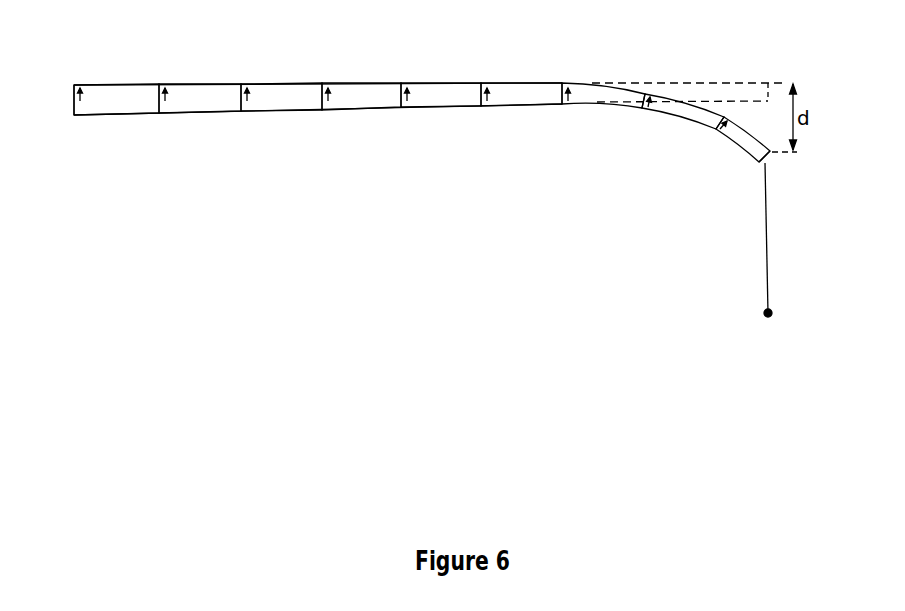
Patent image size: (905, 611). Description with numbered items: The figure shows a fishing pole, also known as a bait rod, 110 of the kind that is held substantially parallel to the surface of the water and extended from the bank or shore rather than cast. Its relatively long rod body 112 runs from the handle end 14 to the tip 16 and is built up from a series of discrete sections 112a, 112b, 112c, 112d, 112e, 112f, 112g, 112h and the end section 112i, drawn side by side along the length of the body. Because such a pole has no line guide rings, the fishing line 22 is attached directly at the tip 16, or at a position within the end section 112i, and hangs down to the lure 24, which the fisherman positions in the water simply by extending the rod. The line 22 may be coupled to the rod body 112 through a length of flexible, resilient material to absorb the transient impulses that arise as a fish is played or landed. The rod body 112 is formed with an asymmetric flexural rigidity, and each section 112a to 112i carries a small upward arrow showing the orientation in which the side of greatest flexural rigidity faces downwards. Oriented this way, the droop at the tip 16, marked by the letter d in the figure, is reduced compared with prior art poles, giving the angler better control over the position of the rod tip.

The handle end 14 is at (75, 125).
The tip 16 is at (754, 170).
The fishing line 22 is at (777, 275).
The lure 24 is at (778, 318).
The fishing pole 110 is at (212, 298).
The rod body 112 is at (402, 120).
The rod section 112a is at (113, 100).
The rod section 112b is at (200, 97).
The rod section 112c is at (283, 99).
The rod section 112d is at (360, 99).
The rod section 112e is at (440, 98).
The rod section 112f is at (523, 98).
The rod section 112g is at (595, 97).
The rod section 112h is at (683, 112).
The end section 112i is at (740, 138).